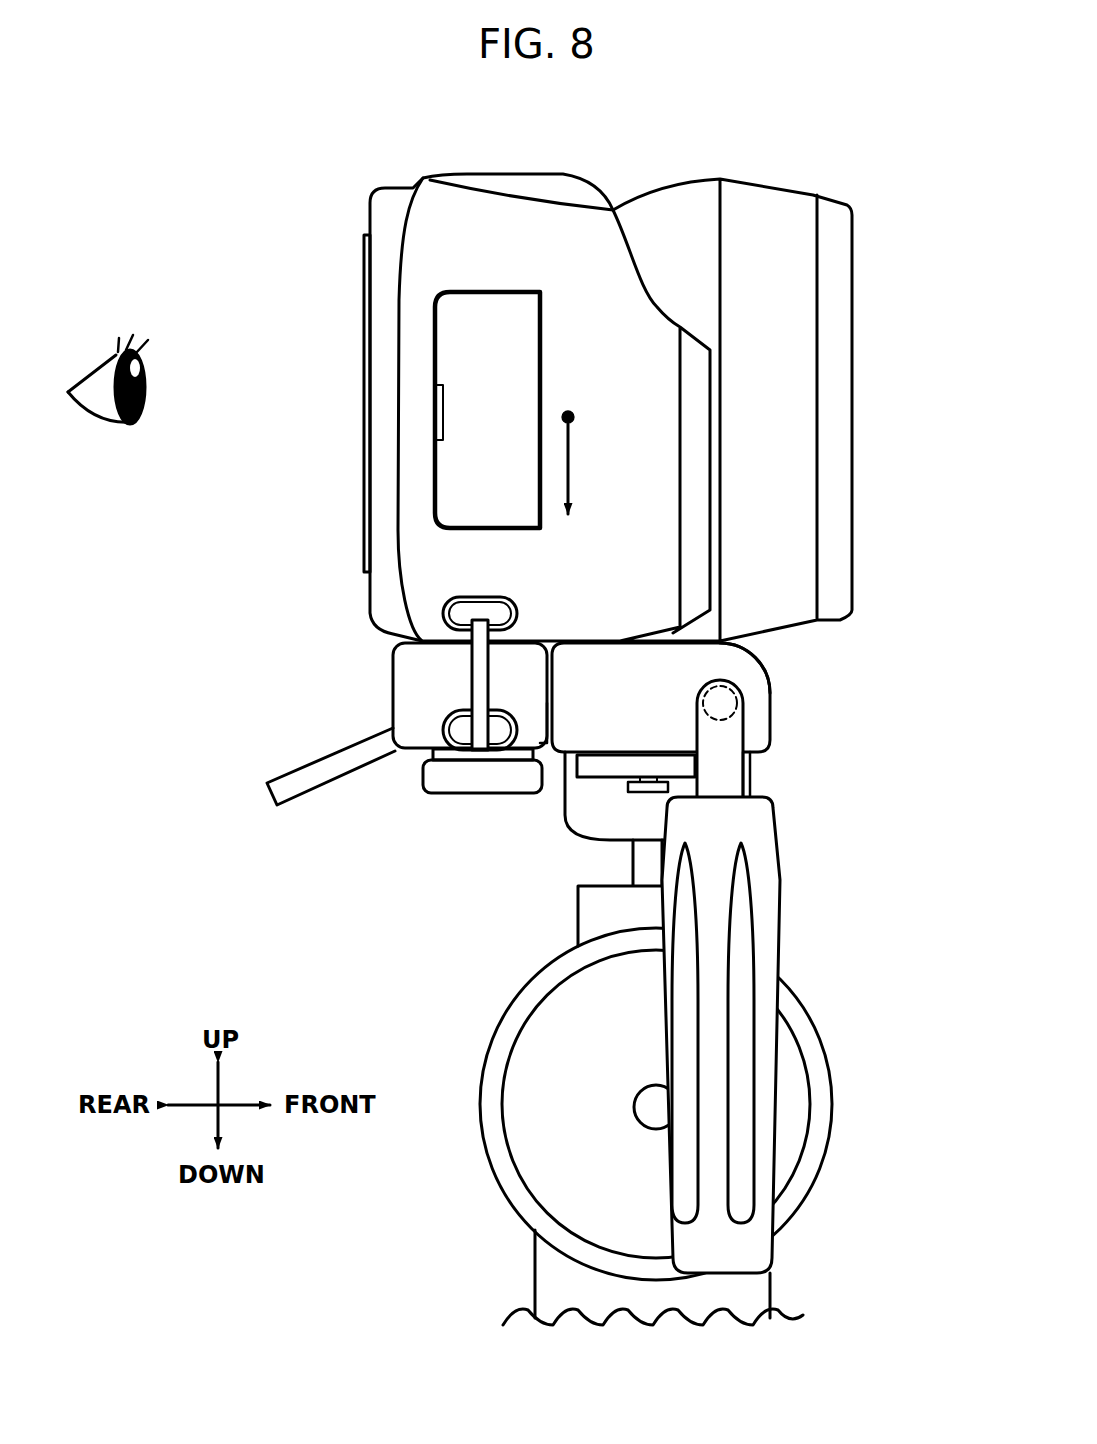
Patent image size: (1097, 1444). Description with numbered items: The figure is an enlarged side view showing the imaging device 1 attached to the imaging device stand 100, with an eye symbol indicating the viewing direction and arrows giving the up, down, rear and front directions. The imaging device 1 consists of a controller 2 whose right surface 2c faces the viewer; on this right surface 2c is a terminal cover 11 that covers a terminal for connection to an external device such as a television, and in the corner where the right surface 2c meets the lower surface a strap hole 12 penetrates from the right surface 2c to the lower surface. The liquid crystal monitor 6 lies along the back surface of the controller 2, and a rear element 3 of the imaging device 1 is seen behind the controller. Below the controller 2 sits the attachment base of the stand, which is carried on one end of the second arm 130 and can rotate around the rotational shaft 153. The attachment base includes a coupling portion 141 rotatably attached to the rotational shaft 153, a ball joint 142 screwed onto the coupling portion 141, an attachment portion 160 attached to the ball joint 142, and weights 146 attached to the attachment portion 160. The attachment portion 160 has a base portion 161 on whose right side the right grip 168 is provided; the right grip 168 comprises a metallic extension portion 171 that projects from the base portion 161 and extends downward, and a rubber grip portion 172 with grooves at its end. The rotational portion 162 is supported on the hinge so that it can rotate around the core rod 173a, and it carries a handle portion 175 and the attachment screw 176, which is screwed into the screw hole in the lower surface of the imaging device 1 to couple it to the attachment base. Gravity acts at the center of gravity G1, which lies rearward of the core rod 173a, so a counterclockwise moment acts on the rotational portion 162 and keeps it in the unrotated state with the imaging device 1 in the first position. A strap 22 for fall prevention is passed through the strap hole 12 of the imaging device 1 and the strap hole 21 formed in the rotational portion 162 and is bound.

The imaging device 1 is at (291, 169).
The controller 2 is at (436, 173).
The right surface 2c is at (567, 236).
The rear cover 3 is at (781, 181).
The liquid crystal monitor 6 is at (365, 411).
The terminal cover 11 is at (437, 338).
The strap hole 12 is at (447, 623).
The strap hole 21 is at (460, 730).
The strap 22 is at (468, 690).
The rotational portion 162 is at (393, 707).
The handle portion 175 is at (300, 768).
The attachment screw 176 is at (490, 793).
The imaging device stand 100 is at (911, 1019).
The attachment portion 160 is at (768, 658).
The base portion 161 is at (770, 684).
The core rod 173a is at (745, 708).
The extension portion 171 is at (745, 735).
The right grip 168 is at (750, 782).
The grip portion 172 is at (780, 967).
The weights 146 is at (574, 775).
The ball joint 142 is at (578, 822).
The coupling portion 141 is at (577, 920).
The rotational shaft 153 is at (490, 1173).
The second arm 130 is at (531, 1278).
The center of gravity G1 is at (587, 460).